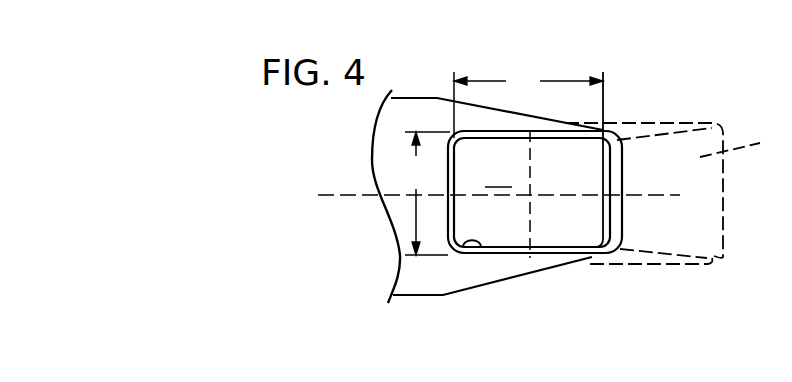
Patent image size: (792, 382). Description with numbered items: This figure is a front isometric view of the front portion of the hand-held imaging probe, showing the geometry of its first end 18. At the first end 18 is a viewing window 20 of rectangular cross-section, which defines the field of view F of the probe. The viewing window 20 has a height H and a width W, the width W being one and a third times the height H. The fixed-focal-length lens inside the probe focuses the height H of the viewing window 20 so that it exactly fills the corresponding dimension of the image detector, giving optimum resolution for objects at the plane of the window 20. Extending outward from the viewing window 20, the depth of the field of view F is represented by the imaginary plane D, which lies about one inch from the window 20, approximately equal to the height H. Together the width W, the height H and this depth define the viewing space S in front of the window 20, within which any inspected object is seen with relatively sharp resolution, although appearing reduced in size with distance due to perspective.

The first end 18 is at (472, 268).
The viewing window 20 is at (486, 251).
The width W is at (528, 104).
The height H is at (427, 193).
The field of view F is at (498, 175).
The imaginary plane D is at (725, 185).
The viewing space S is at (738, 144).